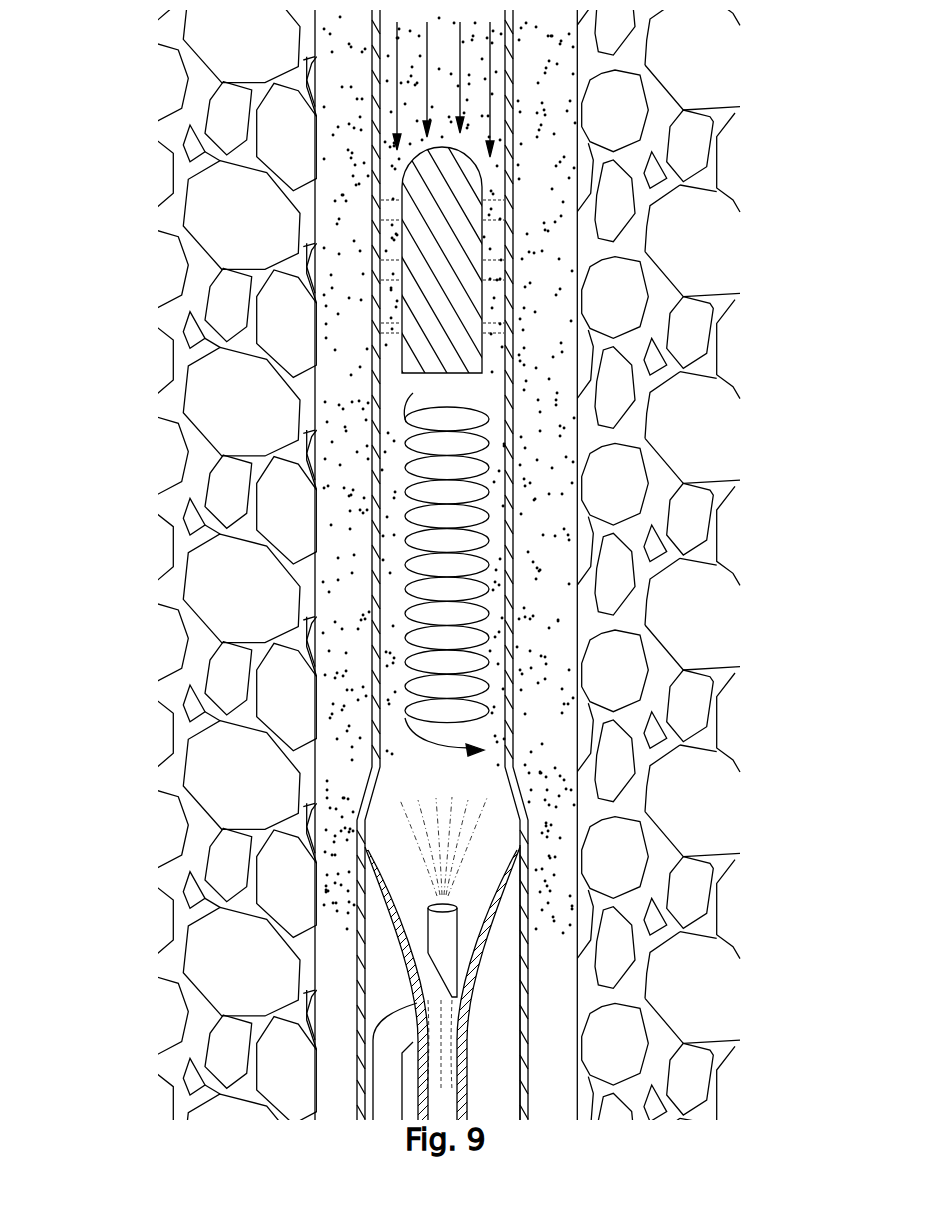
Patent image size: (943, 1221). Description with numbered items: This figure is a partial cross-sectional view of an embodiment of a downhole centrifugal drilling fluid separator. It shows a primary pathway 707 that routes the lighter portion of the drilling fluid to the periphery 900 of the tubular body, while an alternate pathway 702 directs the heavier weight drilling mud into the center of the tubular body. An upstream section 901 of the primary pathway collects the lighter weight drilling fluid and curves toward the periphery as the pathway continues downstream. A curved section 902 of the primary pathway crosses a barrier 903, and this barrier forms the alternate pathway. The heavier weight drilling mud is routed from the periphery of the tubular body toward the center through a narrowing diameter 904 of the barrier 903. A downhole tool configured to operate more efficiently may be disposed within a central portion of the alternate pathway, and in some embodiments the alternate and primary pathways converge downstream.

The primary pathway 707 is at (428, 930).
The periphery 900 is at (373, 982).
The curved section 902 is at (385, 1018).
The alternate pathway 702 is at (445, 1103).
The narrowing diameter 904 is at (516, 903).
The upstream section 901 is at (452, 937).
The barrier 903 is at (467, 1055).